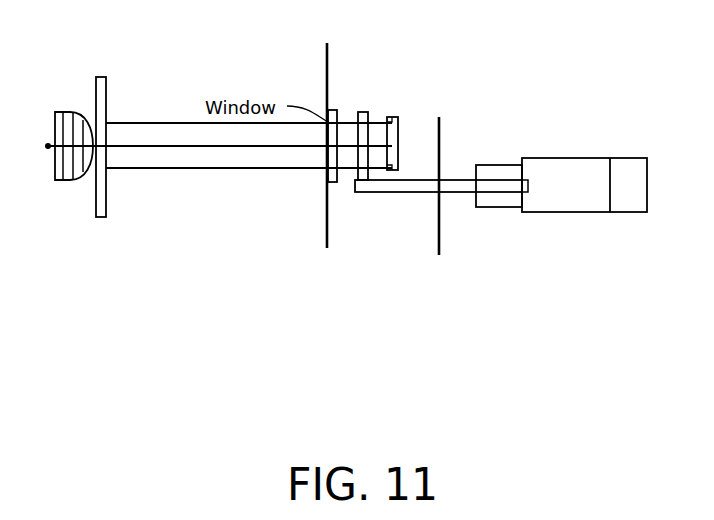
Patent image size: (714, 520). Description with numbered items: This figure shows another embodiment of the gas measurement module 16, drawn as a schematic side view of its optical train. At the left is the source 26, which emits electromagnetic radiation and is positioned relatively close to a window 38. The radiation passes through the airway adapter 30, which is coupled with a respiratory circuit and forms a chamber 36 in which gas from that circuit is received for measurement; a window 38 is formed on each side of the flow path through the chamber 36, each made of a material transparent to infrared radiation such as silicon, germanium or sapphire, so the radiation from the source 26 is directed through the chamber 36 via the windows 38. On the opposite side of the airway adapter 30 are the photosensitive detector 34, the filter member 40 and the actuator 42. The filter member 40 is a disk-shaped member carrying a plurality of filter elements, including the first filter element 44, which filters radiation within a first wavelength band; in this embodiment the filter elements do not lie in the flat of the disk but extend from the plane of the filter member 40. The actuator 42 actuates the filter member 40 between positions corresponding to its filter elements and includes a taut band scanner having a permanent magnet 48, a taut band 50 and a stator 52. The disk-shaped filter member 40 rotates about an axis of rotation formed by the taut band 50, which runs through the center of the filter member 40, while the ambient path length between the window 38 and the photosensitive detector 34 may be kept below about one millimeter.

The gas measurement module 16 is at (155, 367).
The source 26 is at (47, 198).
The airway adapter 30 is at (248, 296).
The photosensitive detector 34 is at (390, 120).
The chamber 36 is at (216, 201).
The window 38 is at (102, 77).
The filter member 40 is at (393, 192).
The actuator 42 is at (584, 140).
The first filter element 44 is at (362, 130).
The permanent magnet 48 is at (493, 167).
The taut band 50 is at (439, 257).
The stator 52 is at (628, 167).